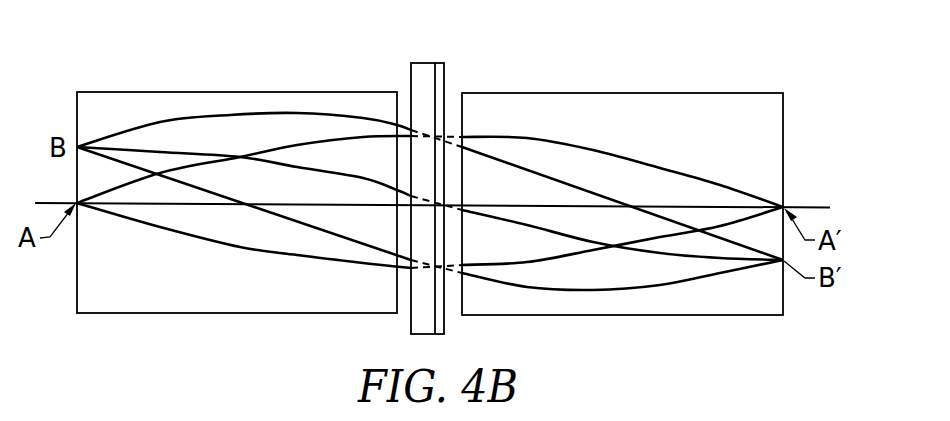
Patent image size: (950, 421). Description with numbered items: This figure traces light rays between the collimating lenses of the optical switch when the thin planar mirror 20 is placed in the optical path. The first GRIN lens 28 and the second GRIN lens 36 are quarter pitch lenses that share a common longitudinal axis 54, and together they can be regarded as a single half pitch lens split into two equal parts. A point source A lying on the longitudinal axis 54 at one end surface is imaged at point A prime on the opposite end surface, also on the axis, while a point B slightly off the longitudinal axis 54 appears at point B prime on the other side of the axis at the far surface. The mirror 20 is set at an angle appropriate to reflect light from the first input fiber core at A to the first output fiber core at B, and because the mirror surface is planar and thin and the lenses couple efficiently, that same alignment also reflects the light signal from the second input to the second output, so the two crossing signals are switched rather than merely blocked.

The mirror 20 is at (411, 172).
The first GRIN lens 28 is at (237, 228).
The second GRIN lens 36 is at (622, 226).
The longitudinal axis 54 is at (447, 213).